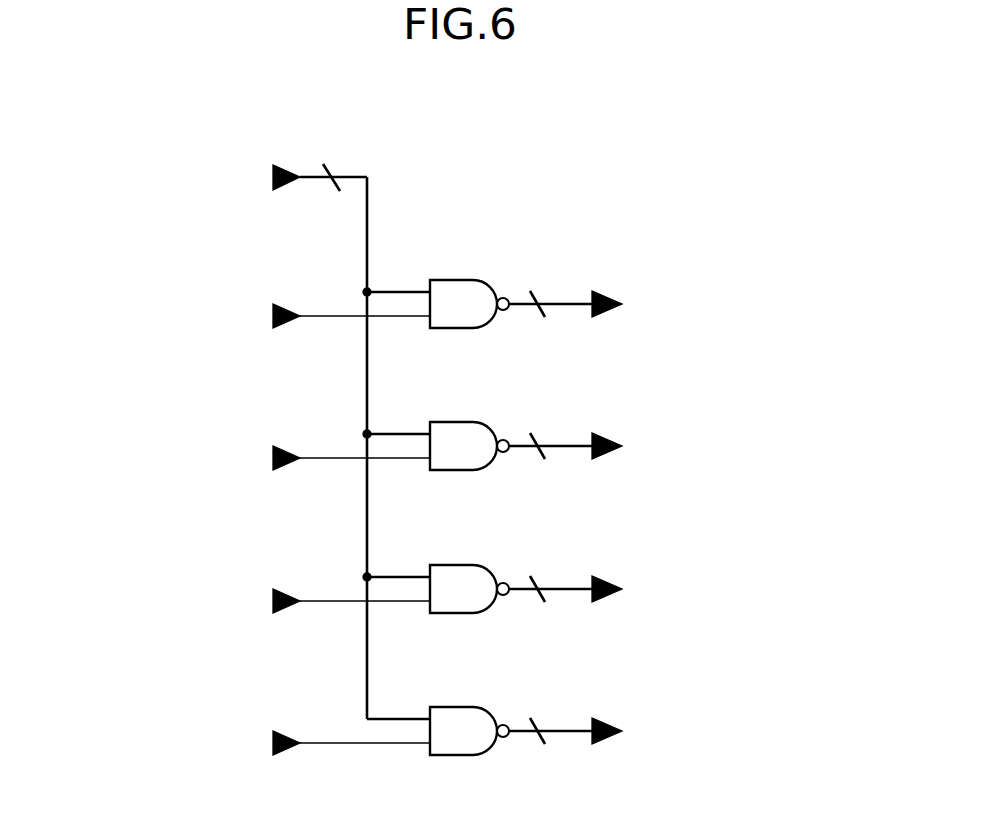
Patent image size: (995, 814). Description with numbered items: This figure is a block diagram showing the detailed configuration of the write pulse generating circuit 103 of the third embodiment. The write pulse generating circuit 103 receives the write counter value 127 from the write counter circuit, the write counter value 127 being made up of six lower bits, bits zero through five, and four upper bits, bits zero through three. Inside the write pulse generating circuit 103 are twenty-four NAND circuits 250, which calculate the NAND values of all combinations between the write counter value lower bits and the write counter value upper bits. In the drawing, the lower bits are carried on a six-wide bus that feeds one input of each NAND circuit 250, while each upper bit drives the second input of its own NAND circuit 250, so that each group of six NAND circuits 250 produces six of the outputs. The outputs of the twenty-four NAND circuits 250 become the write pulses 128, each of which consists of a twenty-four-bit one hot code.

The write pulse generating circuit 103 is at (483, 113).
The NAND circuit 250 is at (461, 705).
The write counter value 127 is at (233, 431).
The write pulses 128 is at (700, 520).